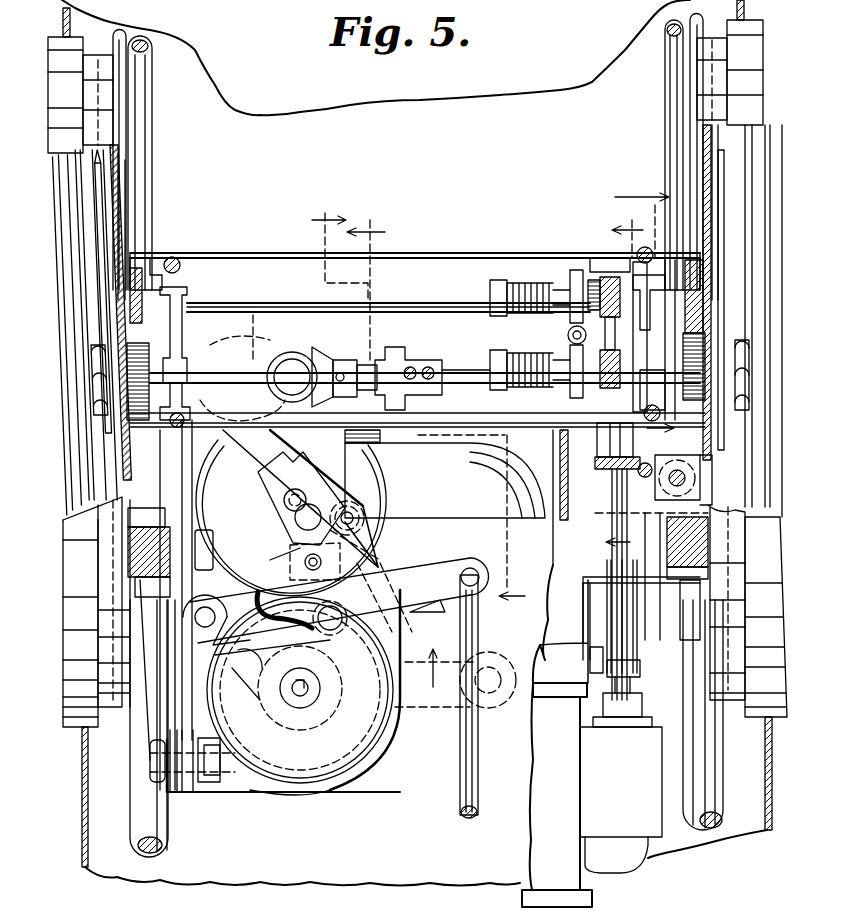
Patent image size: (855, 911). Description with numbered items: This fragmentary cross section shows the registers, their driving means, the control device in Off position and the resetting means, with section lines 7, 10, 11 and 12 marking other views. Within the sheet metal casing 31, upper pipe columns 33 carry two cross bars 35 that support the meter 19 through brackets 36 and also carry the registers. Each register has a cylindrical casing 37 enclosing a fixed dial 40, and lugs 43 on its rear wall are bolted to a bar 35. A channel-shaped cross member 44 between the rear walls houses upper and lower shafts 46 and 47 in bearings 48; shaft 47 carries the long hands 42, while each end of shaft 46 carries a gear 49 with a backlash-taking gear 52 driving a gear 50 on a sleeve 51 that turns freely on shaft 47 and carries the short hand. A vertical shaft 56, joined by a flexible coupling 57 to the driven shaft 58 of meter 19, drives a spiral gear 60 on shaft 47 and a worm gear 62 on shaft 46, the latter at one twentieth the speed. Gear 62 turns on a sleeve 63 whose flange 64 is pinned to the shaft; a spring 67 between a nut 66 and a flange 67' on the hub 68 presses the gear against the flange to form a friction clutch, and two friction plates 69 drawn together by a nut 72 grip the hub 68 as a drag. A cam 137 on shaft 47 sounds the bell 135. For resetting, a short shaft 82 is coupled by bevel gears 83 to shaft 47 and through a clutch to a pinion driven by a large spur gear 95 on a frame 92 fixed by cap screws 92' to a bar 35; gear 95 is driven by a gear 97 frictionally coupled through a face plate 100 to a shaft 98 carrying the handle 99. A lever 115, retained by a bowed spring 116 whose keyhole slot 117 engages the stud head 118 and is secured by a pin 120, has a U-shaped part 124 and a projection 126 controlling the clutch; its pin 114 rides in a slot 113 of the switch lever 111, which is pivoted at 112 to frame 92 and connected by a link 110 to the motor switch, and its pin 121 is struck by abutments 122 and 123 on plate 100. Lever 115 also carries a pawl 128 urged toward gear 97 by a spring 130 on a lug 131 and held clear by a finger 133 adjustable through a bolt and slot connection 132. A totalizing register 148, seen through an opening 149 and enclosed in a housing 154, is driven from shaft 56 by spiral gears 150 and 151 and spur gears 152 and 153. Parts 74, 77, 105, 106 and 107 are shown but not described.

The section line 7 is at (436, 415).
The section line 10 is at (634, 387).
The section line 11 is at (390, 449).
The section line 12 is at (647, 312).
The meter 19 is at (592, 743).
The sheet metal casing 31 is at (772, 825).
The upper pipe columns 33 is at (140, 96).
The cross bars 35 is at (128, 548).
The brackets 36 is at (583, 583).
The cylindrical casing 37 is at (745, 47).
The dial 40 is at (120, 205).
The indicating hand 42 is at (83, 180).
The lugs 43 is at (110, 522).
The cross member 44 is at (268, 252).
The upper shaft 46 is at (490, 295).
The lower shaft 47 is at (445, 372).
The bearings 48 is at (180, 333).
The gear 49 is at (150, 262).
The gear 50 is at (118, 430).
The sleeve 51 is at (128, 405).
The second gear 52 is at (180, 268).
The vertical shaft 56 is at (612, 530).
The flexible coupling 57 is at (637, 642).
The driven shaft 58 is at (640, 683).
The spiral gear 60 is at (597, 440).
The worm gear 62 is at (600, 283).
The sleeve 63 is at (490, 295).
The flange 64 is at (640, 368).
The nut 66 is at (498, 362).
The spring 67 is at (537, 335).
The flange 67' is at (560, 314).
The hub 68 is at (560, 450).
The friction plates 69 is at (592, 283).
The nut 72 is at (568, 338).
The block 74 is at (665, 375).
The bracket 77 is at (627, 294).
The short shaft 82 is at (290, 353).
The bevel gears 83 is at (320, 352).
The frame 92 is at (182, 783).
The cap screws 92' is at (212, 780).
The spur gear 95 is at (380, 440).
The gear 97 is at (303, 790).
The shaft 98 is at (310, 700).
The operating handle 99 is at (430, 713).
The inner face plate 100 is at (300, 690).
The gear rim 105 is at (360, 775).
The disc 106 is at (338, 652).
The cam 107 is at (245, 655).
The link 110 is at (462, 808).
The lever 111 is at (462, 570).
The pivot 112 is at (250, 578).
The slot 113 is at (275, 615).
The pin 114 is at (345, 630).
The lever 115 is at (275, 432).
The bowed spring 116 is at (262, 508).
The keyhole slot 117 is at (348, 510).
The head 118 is at (315, 468).
The pin 120 is at (295, 428).
The pin 121 is at (322, 675).
The abutment 122 is at (300, 636).
The abutment 123 is at (245, 705).
The U-shaped part 124 is at (258, 303).
The projection 126 is at (255, 345).
The pawl 128 is at (400, 622).
The spring 130 is at (395, 548).
The lug 131 is at (290, 555).
The bolt and slot connection 132 is at (275, 523).
The finger 133 is at (350, 575).
The bell 135 is at (450, 483).
The cam 137 is at (432, 398).
The totalizing register 148 is at (652, 520).
The opening 149 is at (712, 478).
The spiral gear 150 is at (603, 470).
The spiral gear 151 is at (615, 480).
The spur gear 152 is at (655, 480).
The gear 153 is at (700, 482).
The housing 154 is at (556, 515).